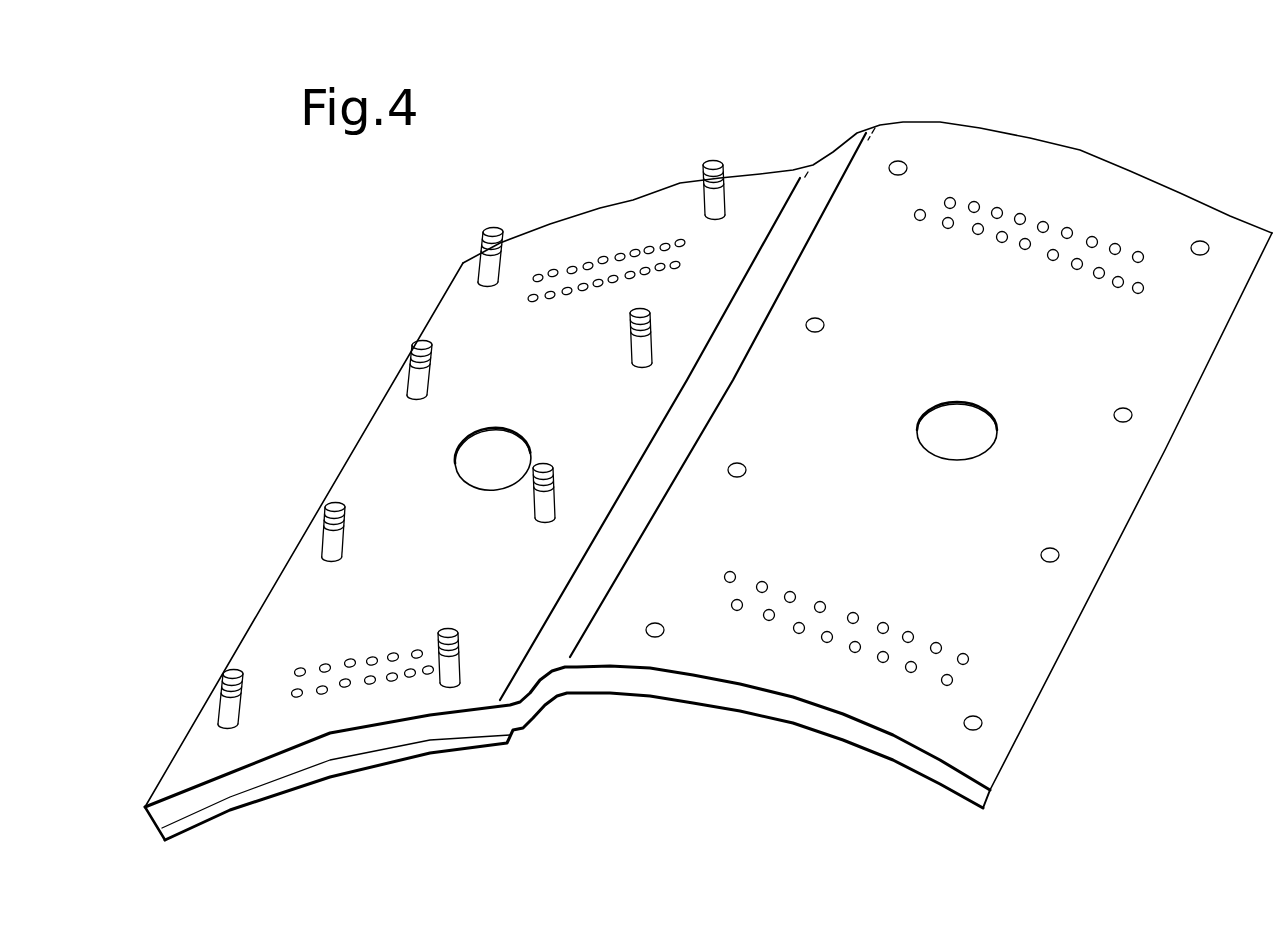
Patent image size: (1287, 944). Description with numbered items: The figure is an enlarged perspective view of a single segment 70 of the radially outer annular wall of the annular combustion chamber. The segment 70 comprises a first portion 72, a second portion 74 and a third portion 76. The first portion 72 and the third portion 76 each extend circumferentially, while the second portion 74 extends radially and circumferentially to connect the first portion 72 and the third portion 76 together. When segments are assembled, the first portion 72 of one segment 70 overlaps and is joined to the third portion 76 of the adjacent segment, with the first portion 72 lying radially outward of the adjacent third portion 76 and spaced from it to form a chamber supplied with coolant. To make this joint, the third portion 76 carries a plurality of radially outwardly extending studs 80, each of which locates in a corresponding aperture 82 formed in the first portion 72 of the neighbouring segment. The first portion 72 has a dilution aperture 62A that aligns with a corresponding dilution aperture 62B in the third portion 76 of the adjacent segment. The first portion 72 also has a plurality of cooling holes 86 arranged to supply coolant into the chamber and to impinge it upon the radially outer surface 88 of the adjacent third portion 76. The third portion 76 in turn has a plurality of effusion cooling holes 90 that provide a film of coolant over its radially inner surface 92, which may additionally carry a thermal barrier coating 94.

The segment 70 is at (975, 146).
The first portion 72 is at (1075, 175).
The second portion 74 is at (843, 158).
The third portion 76 is at (555, 222).
The stud 80 is at (420, 375).
The aperture 82 is at (1205, 240).
The cooling holes 86 is at (1135, 291).
The radially outer surface 88 is at (625, 222).
The effusion cooling holes 90 is at (532, 297).
The radially inner surface 92 is at (312, 770).
The thermal barrier coating 94 is at (192, 820).
The dilution aperture 62A is at (968, 447).
The dilution aperture 62B is at (500, 457).